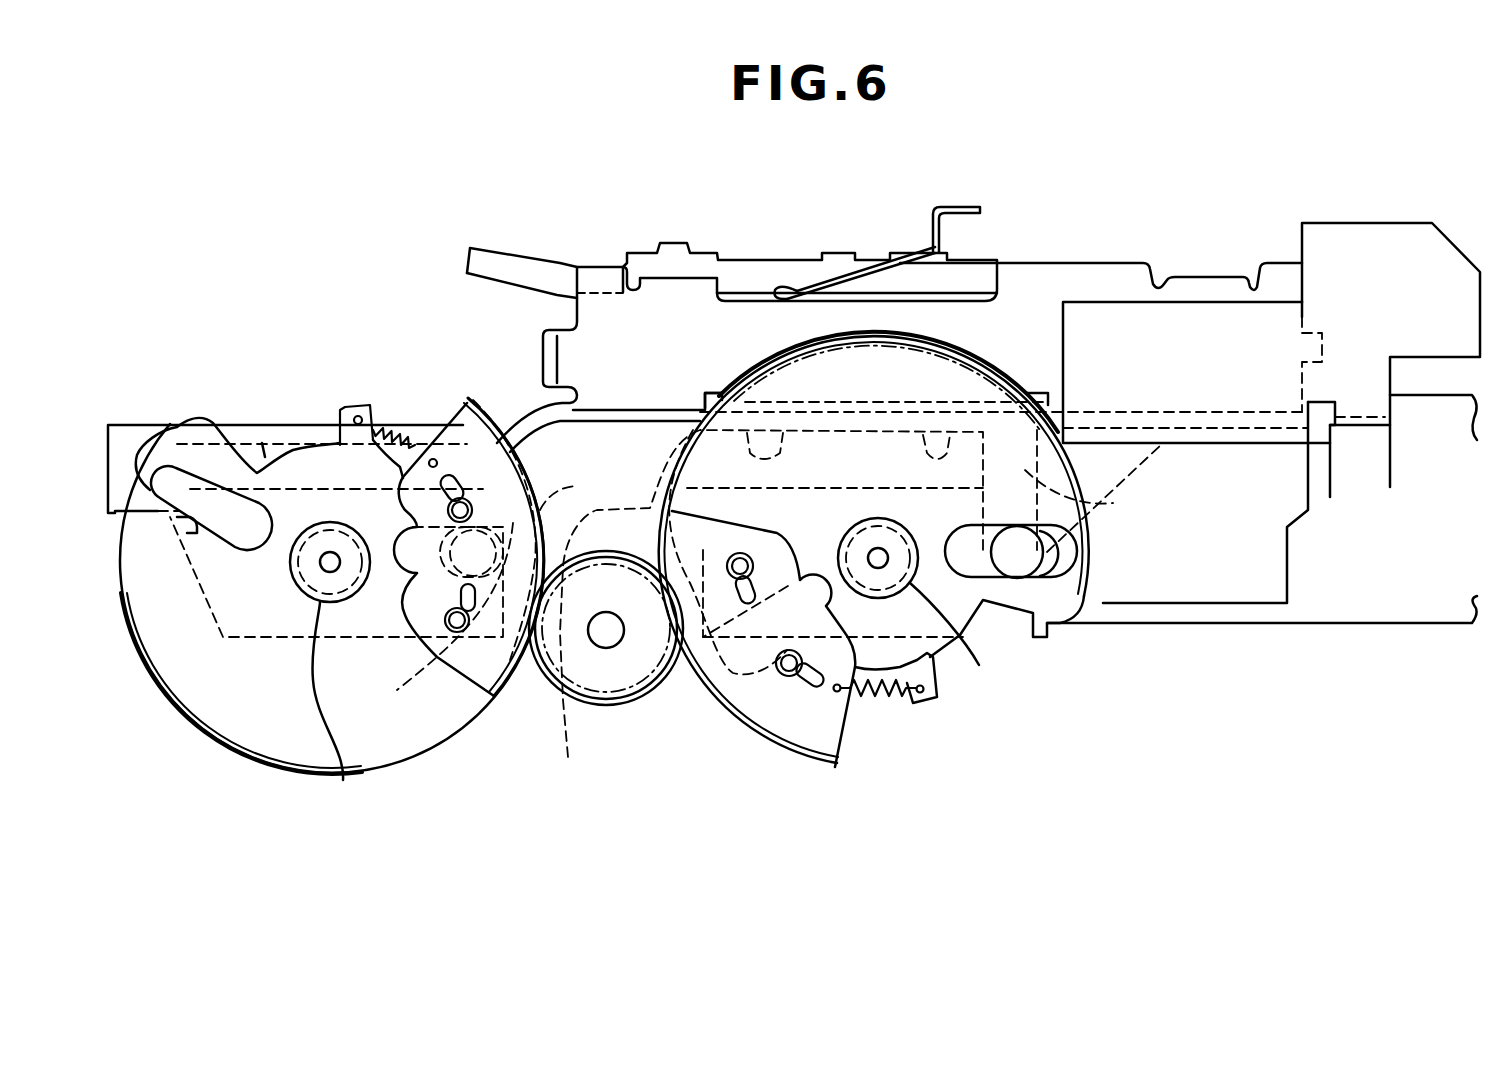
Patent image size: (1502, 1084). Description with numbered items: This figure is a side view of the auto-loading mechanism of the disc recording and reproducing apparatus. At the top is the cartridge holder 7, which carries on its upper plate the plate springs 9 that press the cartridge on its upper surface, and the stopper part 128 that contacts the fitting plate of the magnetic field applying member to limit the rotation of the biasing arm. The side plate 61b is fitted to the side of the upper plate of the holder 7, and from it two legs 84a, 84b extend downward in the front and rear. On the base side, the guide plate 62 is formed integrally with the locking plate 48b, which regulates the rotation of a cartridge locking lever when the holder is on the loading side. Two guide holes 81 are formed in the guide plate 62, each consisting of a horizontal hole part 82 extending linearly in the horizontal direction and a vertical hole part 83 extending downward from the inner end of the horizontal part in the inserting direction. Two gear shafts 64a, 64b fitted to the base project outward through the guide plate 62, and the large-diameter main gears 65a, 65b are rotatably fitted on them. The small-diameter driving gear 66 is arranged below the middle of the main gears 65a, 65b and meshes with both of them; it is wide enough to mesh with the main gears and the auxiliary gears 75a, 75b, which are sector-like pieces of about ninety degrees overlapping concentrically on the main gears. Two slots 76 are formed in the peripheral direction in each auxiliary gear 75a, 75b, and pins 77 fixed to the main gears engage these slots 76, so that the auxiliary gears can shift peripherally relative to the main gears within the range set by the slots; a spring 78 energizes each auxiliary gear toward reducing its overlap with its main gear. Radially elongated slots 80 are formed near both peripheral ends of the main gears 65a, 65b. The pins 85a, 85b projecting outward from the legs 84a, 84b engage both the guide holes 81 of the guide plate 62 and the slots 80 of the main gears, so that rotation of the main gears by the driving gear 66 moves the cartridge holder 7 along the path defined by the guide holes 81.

The cartridge holder 7 is at (769, 264).
The plate spring 9 is at (868, 262).
The stopper part 128 is at (973, 204).
The side plate 61b is at (1068, 263).
The locking plate 48b is at (1375, 223).
The guide plate 62 is at (145, 425).
The guide hole 81 is at (262, 443).
The horizontal hole part 82 is at (305, 442).
The spring 78 is at (373, 430).
The slot 76 is at (433, 459).
The pin 77 is at (470, 482).
The vertical hole part 83 is at (1135, 514).
The leg 84a is at (766, 608).
The leg 84b is at (1160, 464).
The pin 85a is at (458, 562).
The pin 85b is at (1082, 550).
The slot 80 is at (197, 530).
The driving gear 66 is at (648, 675).
The main gear 65a is at (240, 750).
The main gear 65b is at (1040, 637).
The gear shaft 64a is at (330, 667).
The gear shaft 64b is at (927, 603).
The auxiliary gear 75a is at (466, 400).
The auxiliary gear 75b is at (843, 750).